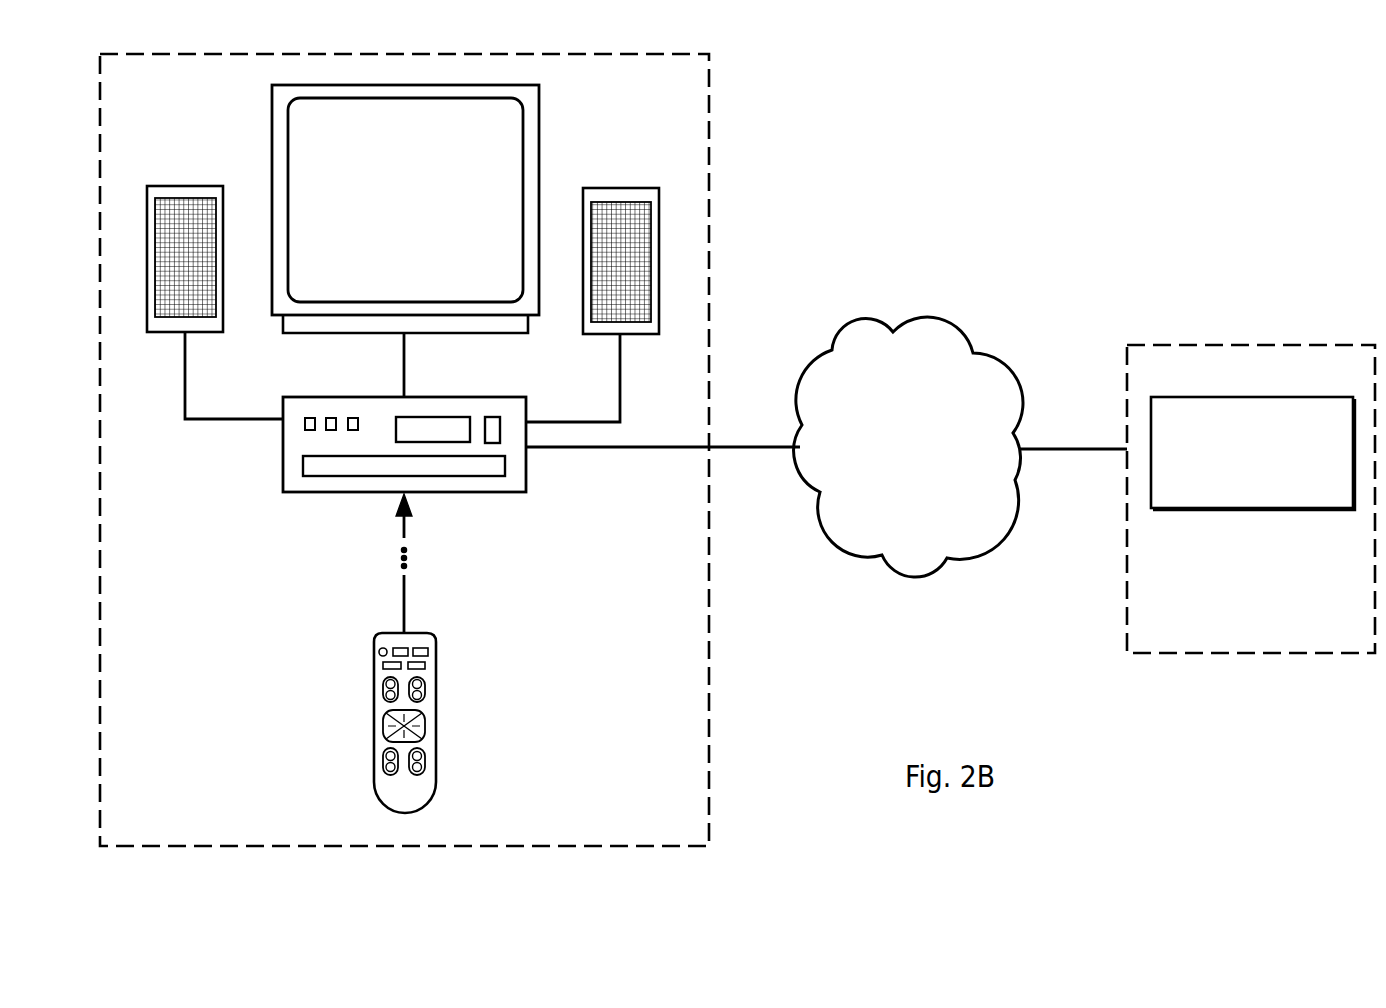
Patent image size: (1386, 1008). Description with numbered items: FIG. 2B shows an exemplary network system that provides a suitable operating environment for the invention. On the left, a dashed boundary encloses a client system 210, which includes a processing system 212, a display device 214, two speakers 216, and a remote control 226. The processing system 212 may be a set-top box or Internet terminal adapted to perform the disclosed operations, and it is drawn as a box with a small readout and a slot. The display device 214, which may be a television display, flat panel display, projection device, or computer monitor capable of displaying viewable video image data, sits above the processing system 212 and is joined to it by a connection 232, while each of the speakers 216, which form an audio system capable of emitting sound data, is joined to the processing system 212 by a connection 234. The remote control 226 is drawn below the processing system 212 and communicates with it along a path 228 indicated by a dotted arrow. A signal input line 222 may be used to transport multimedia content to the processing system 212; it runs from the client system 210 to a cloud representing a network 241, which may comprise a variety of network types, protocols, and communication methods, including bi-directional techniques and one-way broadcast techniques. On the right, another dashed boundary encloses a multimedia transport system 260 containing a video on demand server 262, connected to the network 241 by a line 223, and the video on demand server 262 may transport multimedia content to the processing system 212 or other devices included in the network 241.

The client system 210 is at (215, 760).
The processing system 212 is at (483, 484).
The display device 214 is at (390, 237).
The speakers 216 is at (239, 166).
The signal input line 222 is at (607, 449).
The connection to multimedia transport system 223 is at (1083, 449).
The remote control 226 is at (428, 710).
The wireless signal from remote control 228 is at (398, 557).
The display connection 232 is at (406, 379).
The speaker connection 234 is at (186, 379).
The network 241 is at (893, 468).
The multimedia transport system 260 is at (1237, 642).
The video on demand server 262 is at (1237, 494).